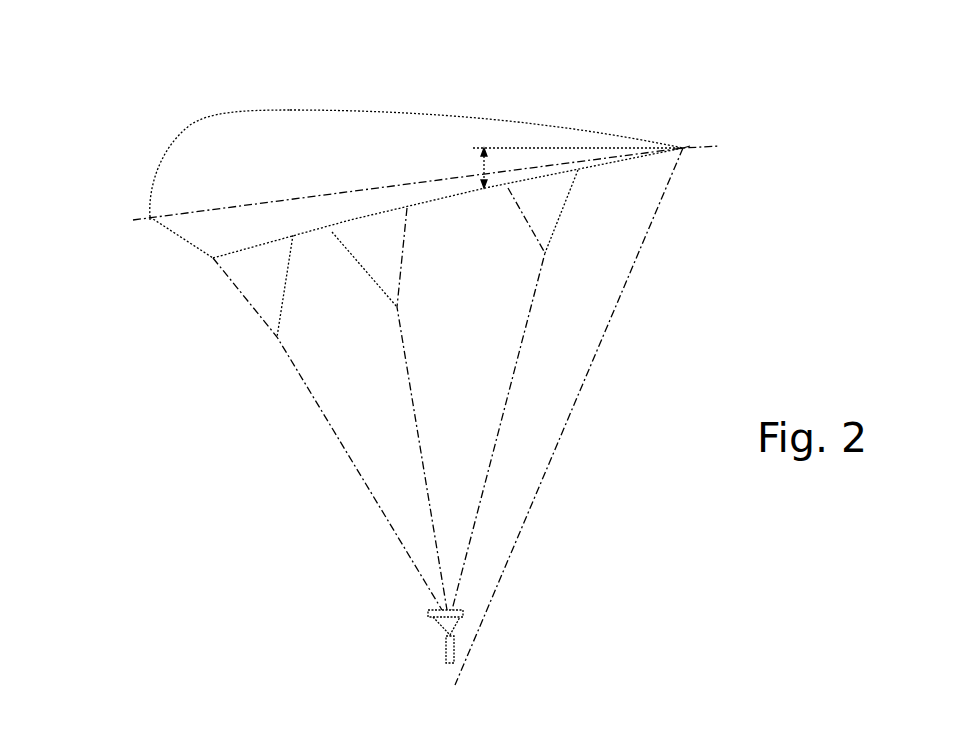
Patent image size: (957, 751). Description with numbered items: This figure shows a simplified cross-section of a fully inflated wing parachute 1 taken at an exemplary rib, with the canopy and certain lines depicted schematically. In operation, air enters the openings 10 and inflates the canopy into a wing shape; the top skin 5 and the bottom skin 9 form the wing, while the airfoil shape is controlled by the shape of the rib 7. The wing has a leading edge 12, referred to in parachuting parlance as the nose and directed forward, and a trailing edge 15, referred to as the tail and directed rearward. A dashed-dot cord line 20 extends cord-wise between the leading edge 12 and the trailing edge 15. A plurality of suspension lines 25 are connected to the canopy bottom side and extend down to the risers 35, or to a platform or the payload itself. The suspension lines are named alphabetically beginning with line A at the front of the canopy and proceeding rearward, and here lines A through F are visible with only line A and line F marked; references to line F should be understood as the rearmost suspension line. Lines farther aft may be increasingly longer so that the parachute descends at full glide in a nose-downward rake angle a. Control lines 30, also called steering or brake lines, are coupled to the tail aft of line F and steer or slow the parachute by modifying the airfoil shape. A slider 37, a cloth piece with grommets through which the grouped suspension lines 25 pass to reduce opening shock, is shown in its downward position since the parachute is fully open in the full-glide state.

The kite 1 is at (162, 127).
The top skin 5 is at (350, 103).
The rib 7 is at (388, 148).
The bottom skin 9 is at (427, 202).
The openings 10 is at (163, 252).
The leading edge 12 is at (150, 215).
The trailing edge 15 is at (683, 148).
The cord line 20 is at (718, 157).
The suspension lines 25 is at (487, 488).
The control lines 30 is at (662, 257).
The risers 35 is at (445, 653).
The slider 37 is at (428, 612).
The line A is at (242, 297).
The line F is at (570, 197).
The rake angle a is at (571, 167).